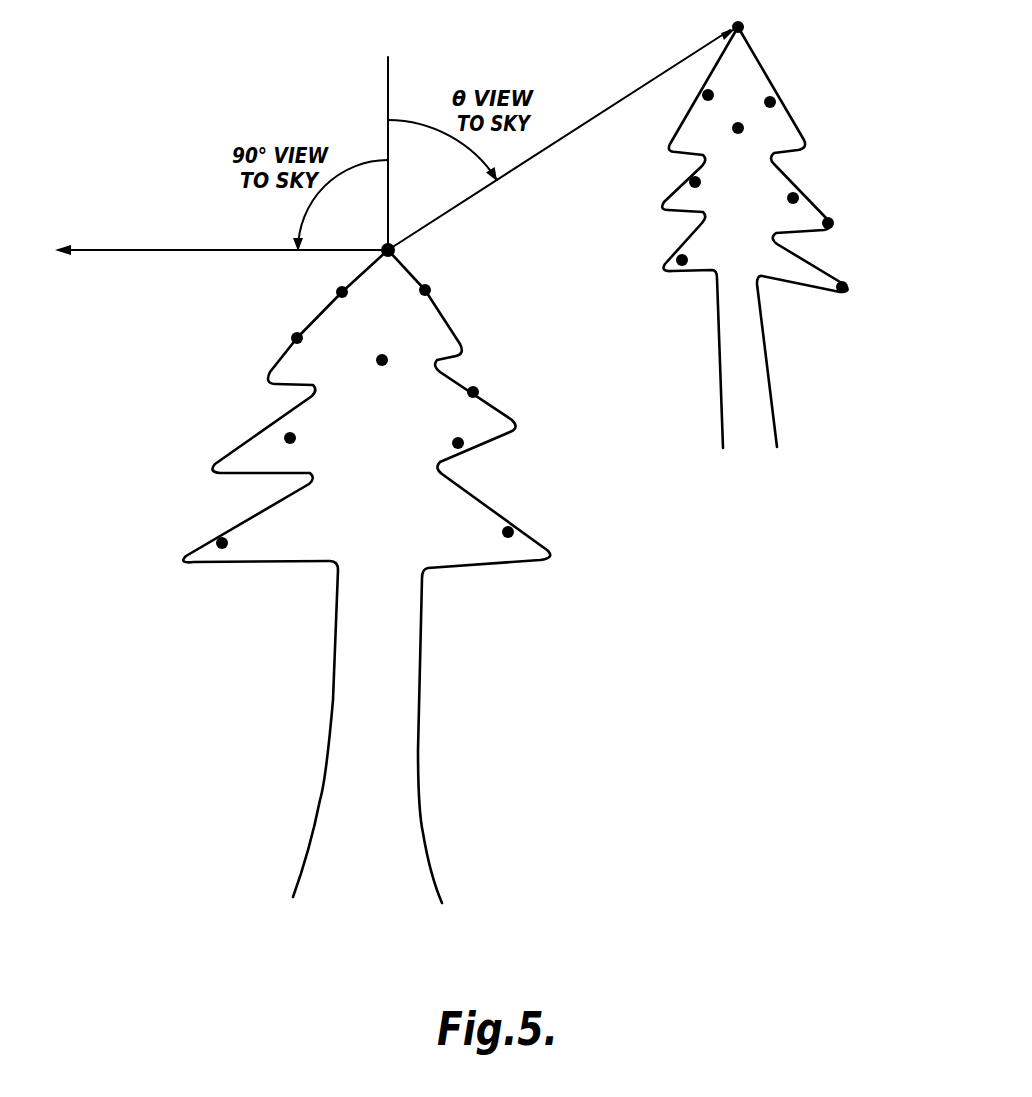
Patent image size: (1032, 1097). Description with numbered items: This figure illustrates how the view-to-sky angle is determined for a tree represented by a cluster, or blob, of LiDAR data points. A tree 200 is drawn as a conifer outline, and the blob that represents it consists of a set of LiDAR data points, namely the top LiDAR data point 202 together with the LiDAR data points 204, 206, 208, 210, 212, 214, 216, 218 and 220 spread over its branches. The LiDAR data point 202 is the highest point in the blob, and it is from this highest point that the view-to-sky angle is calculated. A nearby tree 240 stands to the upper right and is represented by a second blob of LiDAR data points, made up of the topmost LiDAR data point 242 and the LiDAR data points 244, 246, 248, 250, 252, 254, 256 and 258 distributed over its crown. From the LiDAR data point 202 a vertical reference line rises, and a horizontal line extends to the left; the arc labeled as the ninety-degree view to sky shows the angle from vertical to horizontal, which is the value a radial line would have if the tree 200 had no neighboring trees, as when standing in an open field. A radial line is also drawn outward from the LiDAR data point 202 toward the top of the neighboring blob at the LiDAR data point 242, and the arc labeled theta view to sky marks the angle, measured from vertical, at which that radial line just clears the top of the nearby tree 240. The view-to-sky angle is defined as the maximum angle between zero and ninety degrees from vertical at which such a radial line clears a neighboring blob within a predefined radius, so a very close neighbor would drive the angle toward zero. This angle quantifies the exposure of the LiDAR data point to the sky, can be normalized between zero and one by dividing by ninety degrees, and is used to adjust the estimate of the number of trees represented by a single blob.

The tree 200 is at (421, 640).
The LiDAR data point 202 is at (396, 250).
The LiDAR data point 204 is at (338, 292).
The LiDAR data point 206 is at (429, 290).
The LiDAR data point 208 is at (381, 366).
The LiDAR data point 210 is at (285, 438).
The LiDAR data point 212 is at (478, 391).
The LiDAR data point 214 is at (463, 444).
The LiDAR data point 216 is at (292, 338).
The LiDAR data point 218 is at (217, 543).
The LiDAR data point 220 is at (513, 531).
The nearby tree 240 is at (764, 350).
The LiDAR data point 242 is at (744, 27).
The LiDAR data point 244 is at (703, 96).
The LiDAR data point 246 is at (775, 102).
The LiDAR data point 248 is at (737, 134).
The LiDAR data point 250 is at (690, 182).
The LiDAR data point 252 is at (677, 260).
The LiDAR data point 254 is at (798, 198).
The LiDAR data point 256 is at (834, 223).
The LiDAR data point 258 is at (848, 287).